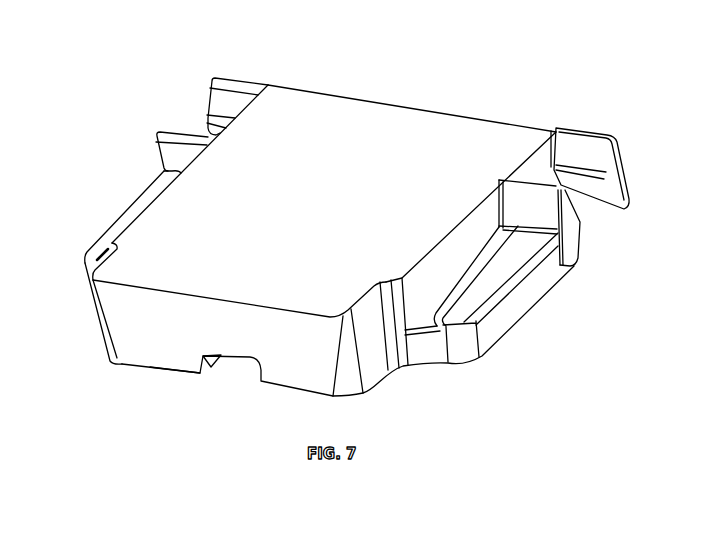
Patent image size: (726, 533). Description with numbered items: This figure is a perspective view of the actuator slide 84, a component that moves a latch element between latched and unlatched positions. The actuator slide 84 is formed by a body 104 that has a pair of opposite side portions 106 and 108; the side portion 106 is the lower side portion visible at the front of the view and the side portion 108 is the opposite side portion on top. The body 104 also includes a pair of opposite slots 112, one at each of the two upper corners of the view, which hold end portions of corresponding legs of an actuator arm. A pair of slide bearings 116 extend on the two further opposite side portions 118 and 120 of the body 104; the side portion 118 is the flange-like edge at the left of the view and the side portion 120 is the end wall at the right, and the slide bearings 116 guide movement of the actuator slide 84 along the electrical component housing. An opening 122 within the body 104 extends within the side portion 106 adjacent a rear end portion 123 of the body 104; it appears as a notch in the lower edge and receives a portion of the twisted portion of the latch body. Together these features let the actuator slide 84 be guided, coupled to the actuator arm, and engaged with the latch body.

The actuator slide 84 is at (148, 48).
The body 104 is at (410, 104).
The side portion 106 is at (357, 397).
The side portion 108 is at (470, 131).
The slots 112 is at (215, 78).
The slide bearings 116 is at (151, 184).
The side portion 118 is at (115, 201).
The side portion 120 is at (566, 295).
The opening 122 is at (212, 368).
The rear end portion 123 is at (197, 397).